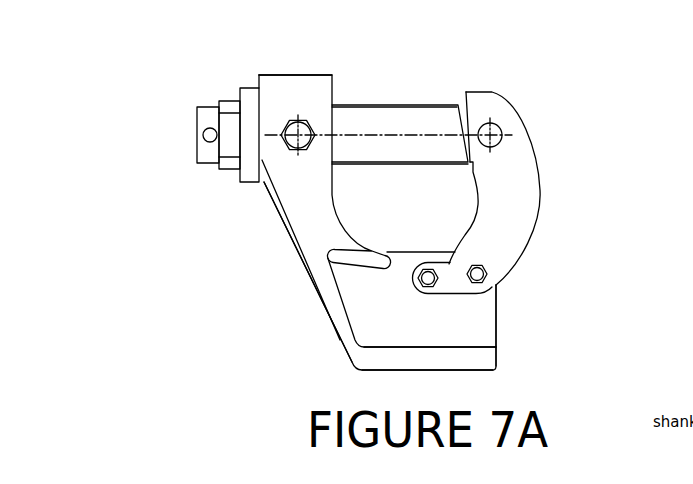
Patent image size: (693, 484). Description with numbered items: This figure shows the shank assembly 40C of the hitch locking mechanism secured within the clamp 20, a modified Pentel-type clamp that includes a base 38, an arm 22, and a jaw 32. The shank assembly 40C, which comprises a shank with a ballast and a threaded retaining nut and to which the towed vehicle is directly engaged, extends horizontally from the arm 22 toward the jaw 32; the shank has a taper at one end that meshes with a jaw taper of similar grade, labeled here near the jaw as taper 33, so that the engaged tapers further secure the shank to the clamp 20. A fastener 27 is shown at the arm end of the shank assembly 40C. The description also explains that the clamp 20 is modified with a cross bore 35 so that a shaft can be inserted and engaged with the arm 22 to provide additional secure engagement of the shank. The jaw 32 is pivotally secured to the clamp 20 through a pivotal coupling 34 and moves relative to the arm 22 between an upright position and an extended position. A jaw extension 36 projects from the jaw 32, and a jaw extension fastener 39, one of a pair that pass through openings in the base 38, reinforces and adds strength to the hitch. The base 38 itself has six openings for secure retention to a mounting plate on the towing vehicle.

The clamp 20 is at (308, 366).
The arm 22 is at (297, 222).
The fastener 27 is at (292, 120).
The jaw 32 is at (516, 192).
The opening 33 is at (470, 87).
The pivotal coupling 34 is at (487, 268).
The cross bore 35 is at (498, 126).
The jaw extension 36 is at (453, 292).
The base 38 is at (377, 332).
The jaw extension fastener 39 is at (429, 286).
The shank assembly 40C is at (345, 62).